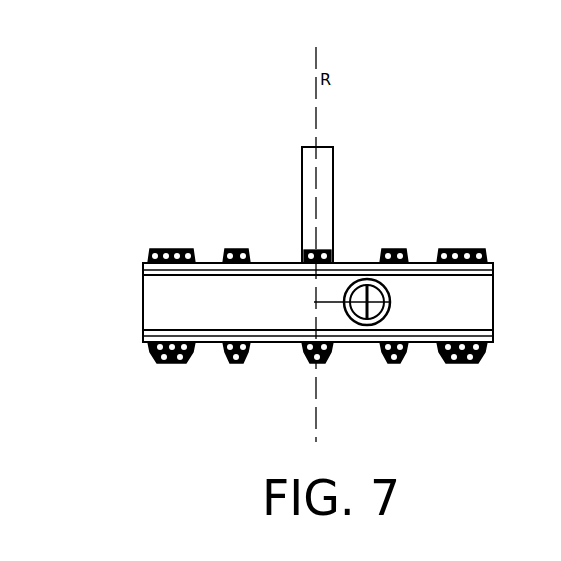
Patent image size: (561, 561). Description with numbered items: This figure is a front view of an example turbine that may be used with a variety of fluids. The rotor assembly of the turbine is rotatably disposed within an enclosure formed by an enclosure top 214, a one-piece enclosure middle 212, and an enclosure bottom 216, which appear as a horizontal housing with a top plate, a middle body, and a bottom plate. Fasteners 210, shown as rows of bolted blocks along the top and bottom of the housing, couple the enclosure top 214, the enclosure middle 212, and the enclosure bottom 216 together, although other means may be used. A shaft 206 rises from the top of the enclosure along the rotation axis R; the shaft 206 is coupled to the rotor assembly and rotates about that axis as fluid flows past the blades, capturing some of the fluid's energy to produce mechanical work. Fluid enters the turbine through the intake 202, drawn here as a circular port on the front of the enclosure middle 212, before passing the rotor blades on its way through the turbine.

The intake 202 is at (388, 304).
The shaft 206 is at (333, 188).
The fasteners 210 is at (487, 253).
The enclosure middle 212 is at (143, 318).
The enclosure top 214 is at (143, 268).
The enclosure bottom 216 is at (493, 335).